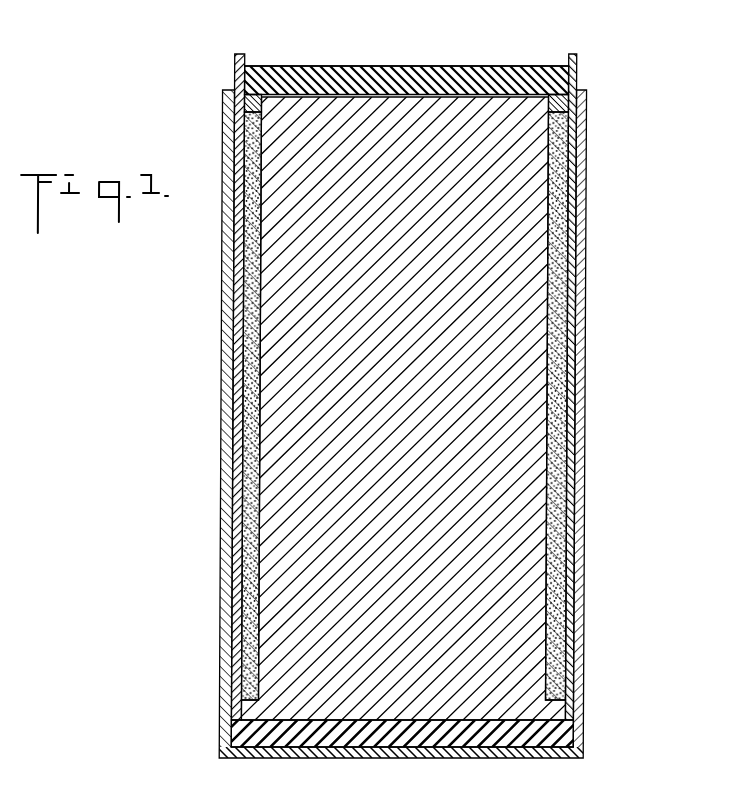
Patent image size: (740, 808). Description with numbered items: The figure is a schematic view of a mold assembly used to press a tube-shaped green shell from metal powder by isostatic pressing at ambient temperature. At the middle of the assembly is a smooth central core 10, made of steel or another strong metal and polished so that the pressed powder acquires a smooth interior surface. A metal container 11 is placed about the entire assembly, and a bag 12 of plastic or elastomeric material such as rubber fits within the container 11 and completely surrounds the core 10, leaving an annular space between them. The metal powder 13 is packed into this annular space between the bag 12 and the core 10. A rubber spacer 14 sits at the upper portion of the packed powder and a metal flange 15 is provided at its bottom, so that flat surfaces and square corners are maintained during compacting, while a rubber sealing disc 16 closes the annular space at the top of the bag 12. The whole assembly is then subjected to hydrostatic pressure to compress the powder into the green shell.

The central core 10 is at (515, 573).
The metal container 11 is at (585, 317).
The bag 12 is at (580, 63).
The metal powder 13 is at (253, 413).
The rubber spacer 14 is at (583, 107).
The metal flange 15 is at (227, 722).
The rubber sealing disc 16 is at (287, 66).